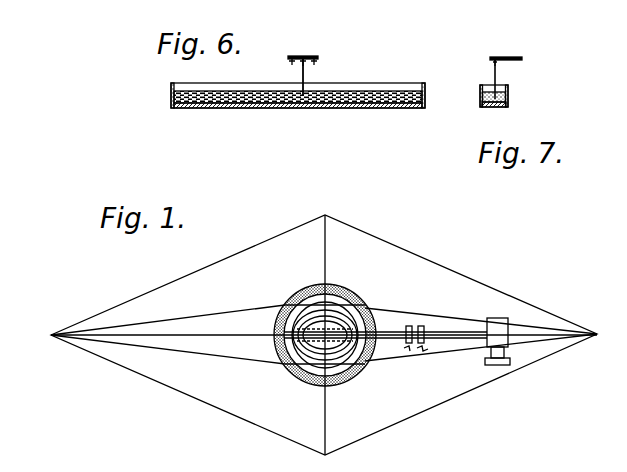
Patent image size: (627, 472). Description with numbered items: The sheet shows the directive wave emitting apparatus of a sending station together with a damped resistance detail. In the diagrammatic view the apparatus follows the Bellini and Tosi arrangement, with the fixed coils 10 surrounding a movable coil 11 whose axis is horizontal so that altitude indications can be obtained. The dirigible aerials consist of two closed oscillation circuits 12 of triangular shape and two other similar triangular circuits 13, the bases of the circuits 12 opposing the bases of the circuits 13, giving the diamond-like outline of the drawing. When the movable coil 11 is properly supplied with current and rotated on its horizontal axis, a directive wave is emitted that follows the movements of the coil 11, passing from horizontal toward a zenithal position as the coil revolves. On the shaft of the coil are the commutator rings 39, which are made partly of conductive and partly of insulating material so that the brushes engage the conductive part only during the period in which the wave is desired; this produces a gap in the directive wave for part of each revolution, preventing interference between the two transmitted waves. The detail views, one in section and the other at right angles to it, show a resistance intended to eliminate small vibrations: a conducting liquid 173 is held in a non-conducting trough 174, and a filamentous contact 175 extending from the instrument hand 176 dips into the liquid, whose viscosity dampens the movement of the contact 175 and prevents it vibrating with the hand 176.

In FIG. 1, the fixed coils 10 is at (353, 297).
In FIG. 1, the movable coil 11 is at (300, 357).
In FIG. 1, the closed oscillation circuits 12 is at (413, 414).
In FIG. 1, the closed oscillation circuits 13 is at (263, 430).
In FIG. 1, the commutator rings 39 is at (421, 325).
In FIG. 6, the conducting liquid 173 is at (391, 109).
In FIG. 7, the conducting liquid 173 is at (505, 98).
In FIG. 6, the non-conducting trough 174 is at (423, 109).
In FIG. 7, the non-conducting trough 174 is at (506, 105).
In FIG. 6, the filamentous contact 175 is at (304, 91).
In FIG. 7, the filamentous contact 175 is at (494, 77).
In FIG. 6, the instrument hand 176 is at (311, 57).
In FIG. 7, the instrument hand 176 is at (496, 57).